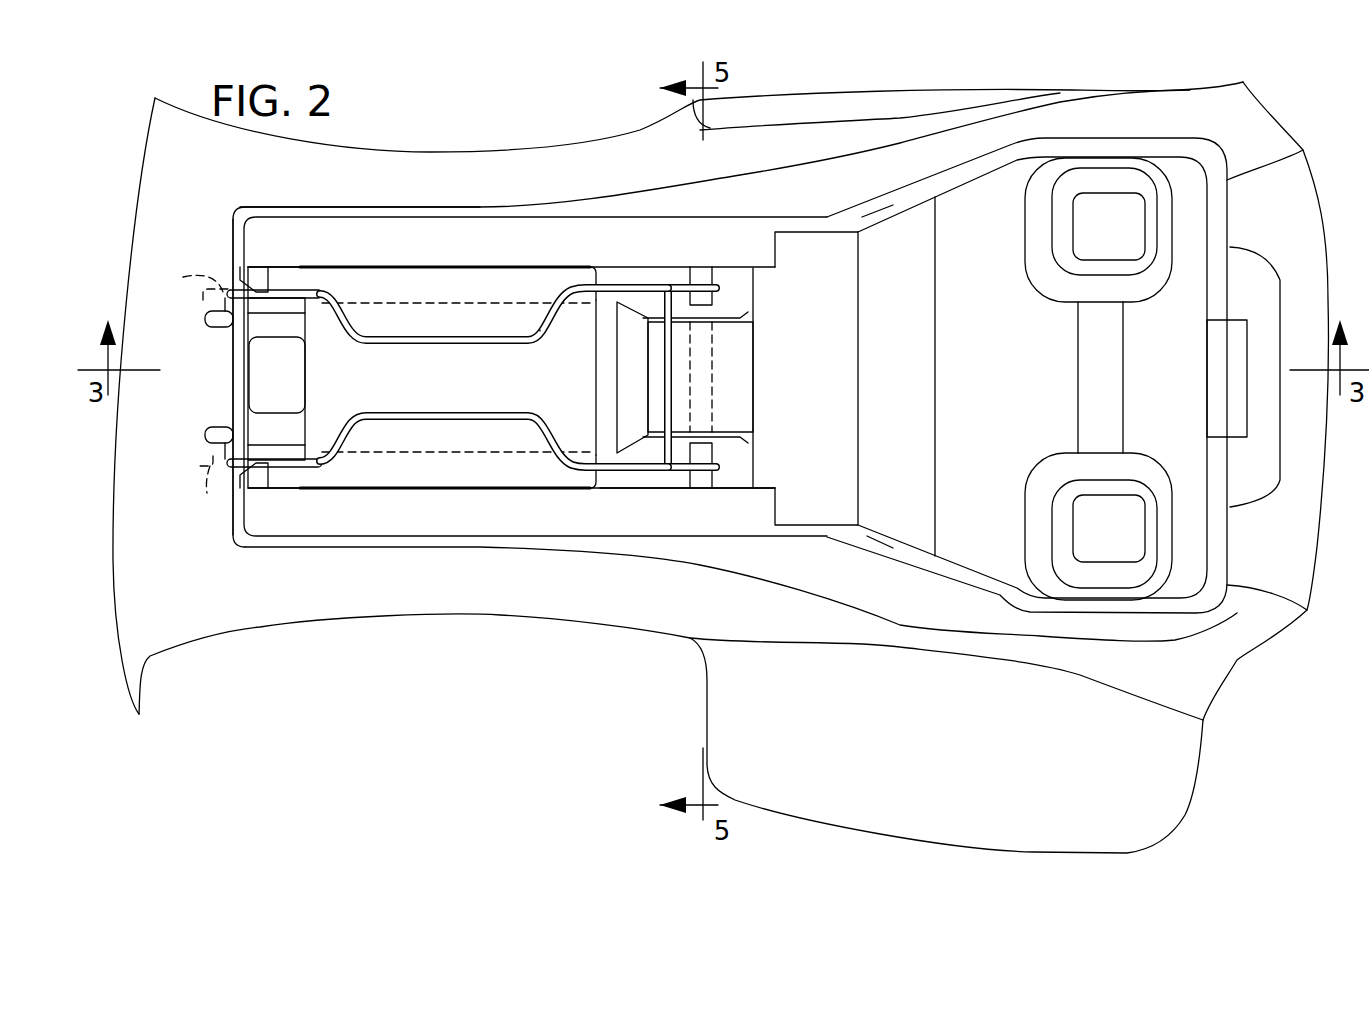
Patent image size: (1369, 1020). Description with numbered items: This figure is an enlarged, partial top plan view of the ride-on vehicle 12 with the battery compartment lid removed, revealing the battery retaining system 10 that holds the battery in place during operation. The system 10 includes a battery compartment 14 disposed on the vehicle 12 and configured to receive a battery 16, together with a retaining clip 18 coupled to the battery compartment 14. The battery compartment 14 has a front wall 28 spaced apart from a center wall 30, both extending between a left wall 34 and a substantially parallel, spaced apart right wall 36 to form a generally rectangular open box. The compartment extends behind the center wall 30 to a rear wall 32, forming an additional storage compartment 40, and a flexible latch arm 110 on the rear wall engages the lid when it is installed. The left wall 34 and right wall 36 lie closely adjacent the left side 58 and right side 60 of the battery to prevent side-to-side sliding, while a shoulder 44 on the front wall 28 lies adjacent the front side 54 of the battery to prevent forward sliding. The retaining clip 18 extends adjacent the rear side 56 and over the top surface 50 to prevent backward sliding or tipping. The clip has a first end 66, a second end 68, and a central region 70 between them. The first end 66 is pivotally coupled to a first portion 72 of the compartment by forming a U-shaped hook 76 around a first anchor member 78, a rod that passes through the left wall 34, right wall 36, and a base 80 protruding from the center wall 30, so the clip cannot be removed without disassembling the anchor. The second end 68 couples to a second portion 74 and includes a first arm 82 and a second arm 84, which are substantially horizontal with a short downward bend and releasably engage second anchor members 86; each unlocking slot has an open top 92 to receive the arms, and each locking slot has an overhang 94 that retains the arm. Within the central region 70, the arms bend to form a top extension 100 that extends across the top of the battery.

The battery retaining system 10 is at (455, 245).
The vehicle 12 is at (955, 825).
The battery compartment 14 is at (280, 482).
The battery 16 is at (484, 384).
The retaining clip 18 is at (362, 335).
The front wall 28 is at (252, 441).
The center wall 30 is at (858, 376).
The rear wall 32 is at (1207, 312).
The left wall 34 is at (455, 490).
The right wall 36 is at (498, 264).
The storage compartment 40 is at (1022, 405).
The shoulder 44 is at (276, 379).
The top surface 50 is at (456, 377).
The front side 54 is at (300, 316).
The rear side 56 is at (598, 366).
The left side 58 is at (502, 482).
The right side 60 is at (458, 270).
The first end 66 is at (698, 408).
The second end 68 is at (266, 286).
The central region 70 is at (540, 346).
The first portion 72 is at (738, 342).
The second portion 74 is at (232, 350).
The hook 76 is at (720, 288).
The first anchor member 78 is at (692, 488).
The base 80 is at (622, 395).
The first arm 82 is at (204, 491).
The second arm 84 is at (189, 281).
The second anchor member 86 is at (207, 316).
The open top 92 is at (216, 448).
The overhang 94 is at (232, 290).
The top extension 100 is at (408, 422).
The flexible latch arm 110 is at (1207, 392).